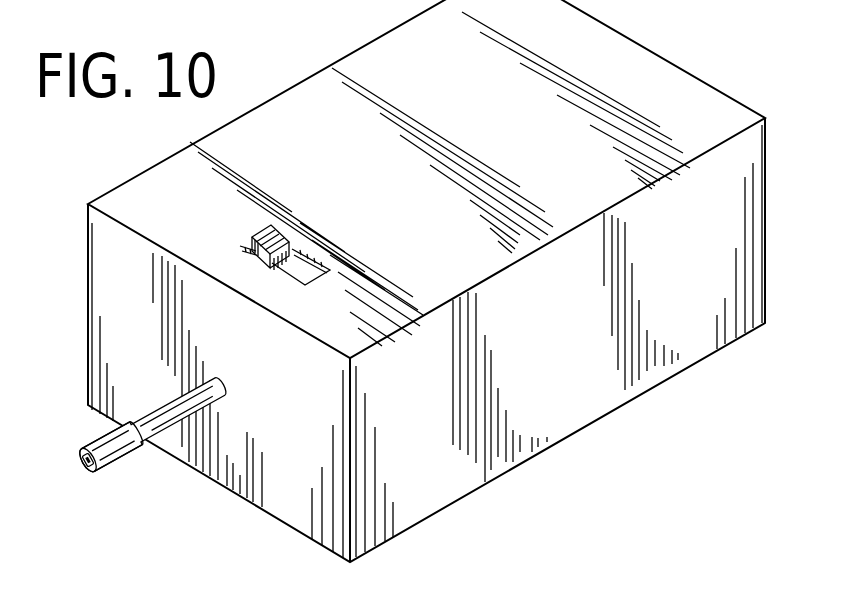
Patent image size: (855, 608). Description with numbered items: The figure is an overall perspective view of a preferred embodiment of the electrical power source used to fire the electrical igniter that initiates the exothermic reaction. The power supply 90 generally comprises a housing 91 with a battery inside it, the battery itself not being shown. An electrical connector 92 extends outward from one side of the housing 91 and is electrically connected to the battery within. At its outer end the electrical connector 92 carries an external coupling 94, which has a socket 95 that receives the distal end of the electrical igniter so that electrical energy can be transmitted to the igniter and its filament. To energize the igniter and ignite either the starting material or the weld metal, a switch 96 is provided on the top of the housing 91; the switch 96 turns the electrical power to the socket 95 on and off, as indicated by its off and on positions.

The power supply 90 is at (612, 62).
The housing 91 is at (484, 131).
The electrical connector 92 is at (167, 405).
The external coupling 94 is at (104, 435).
The socket 95 is at (90, 464).
The switch 96 is at (292, 242).